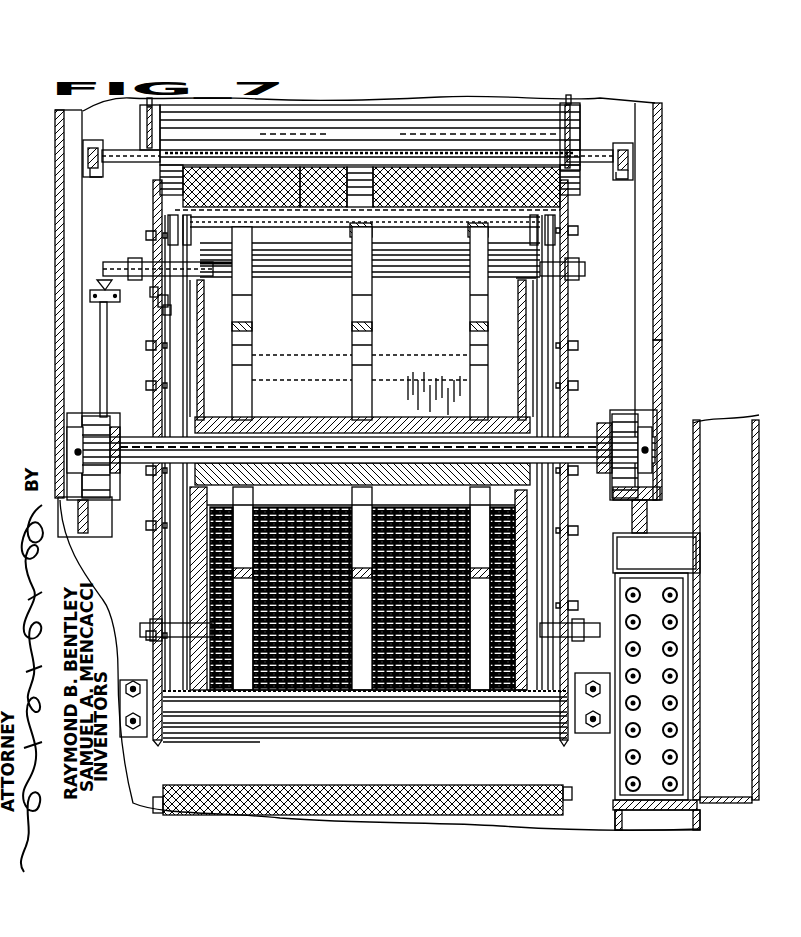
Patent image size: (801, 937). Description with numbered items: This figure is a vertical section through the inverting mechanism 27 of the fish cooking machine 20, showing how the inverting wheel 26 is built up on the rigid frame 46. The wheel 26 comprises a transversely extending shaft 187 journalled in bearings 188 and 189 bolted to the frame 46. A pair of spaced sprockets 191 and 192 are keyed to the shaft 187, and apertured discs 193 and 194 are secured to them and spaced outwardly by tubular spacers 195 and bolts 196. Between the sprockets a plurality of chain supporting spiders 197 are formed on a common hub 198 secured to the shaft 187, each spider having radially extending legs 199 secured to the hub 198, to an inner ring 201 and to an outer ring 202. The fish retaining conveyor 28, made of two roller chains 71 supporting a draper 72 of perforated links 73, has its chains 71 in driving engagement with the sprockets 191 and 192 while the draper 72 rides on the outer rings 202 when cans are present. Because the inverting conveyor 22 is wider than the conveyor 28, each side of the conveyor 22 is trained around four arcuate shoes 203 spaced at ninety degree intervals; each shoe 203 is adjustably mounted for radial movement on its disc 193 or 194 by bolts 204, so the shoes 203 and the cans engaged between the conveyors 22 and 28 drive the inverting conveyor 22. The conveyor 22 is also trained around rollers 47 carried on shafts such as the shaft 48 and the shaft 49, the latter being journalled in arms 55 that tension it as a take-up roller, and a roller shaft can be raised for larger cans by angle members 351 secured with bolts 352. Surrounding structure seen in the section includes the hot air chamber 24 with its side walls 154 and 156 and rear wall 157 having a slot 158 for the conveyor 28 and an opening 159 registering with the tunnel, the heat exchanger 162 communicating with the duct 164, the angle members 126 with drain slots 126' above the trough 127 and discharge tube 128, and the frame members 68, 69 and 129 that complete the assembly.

The fish cooking machine 20 is at (692, 102).
The inverting conveyor 22 is at (390, 208).
The hot air chamber 24 is at (647, 304).
The inverting wheel 26 is at (579, 391).
The inverting mechanism 27 is at (577, 250).
The fish retaining conveyor 28 is at (335, 204).
The rigid frame 46 is at (53, 235).
The rollers 47 is at (356, 125).
The shaft 48 is at (133, 162).
The shaft 49 is at (142, 128).
The arms 55 is at (145, 110).
The lower frame bar 68 is at (360, 720).
The bolt block 69 is at (146, 740).
The roller chains 71 is at (180, 222).
The draper 72 is at (322, 228).
The perforated links 73 is at (370, 222).
The angle members 126 is at (370, 273).
The slots 126' is at (287, 279).
The trough 127 is at (266, 250).
The tube 128 is at (100, 323).
The roller surface 129 is at (430, 102).
The side wall 154 is at (100, 304).
The side wall 156 is at (660, 340).
The rear wall 157 is at (612, 318).
The slot 158 is at (535, 520).
The opening 159 is at (215, 742).
The heat exchanger 162 is at (650, 612).
The duct 164 is at (706, 521).
The shaft 187 is at (300, 437).
The bearing 188 is at (90, 440).
The bearing 189 is at (622, 430).
The sprocket 191 is at (205, 348).
The sprocket 192 is at (520, 345).
The apertured disc 193 is at (160, 312).
The apertured disc 194 is at (568, 292).
The tubular spacers 195 is at (145, 262).
The bolts 196 is at (157, 290).
The chain supporting spiders 197 is at (343, 361).
The hub 198 is at (388, 420).
The legs 199 is at (360, 380).
The inner ring 201 is at (350, 327).
The outer ring 202 is at (262, 208).
The arcuate shoes 203 is at (166, 216).
The bolts 204 is at (146, 236).
The angle members 351 is at (85, 168).
The bolts 352 is at (88, 185).